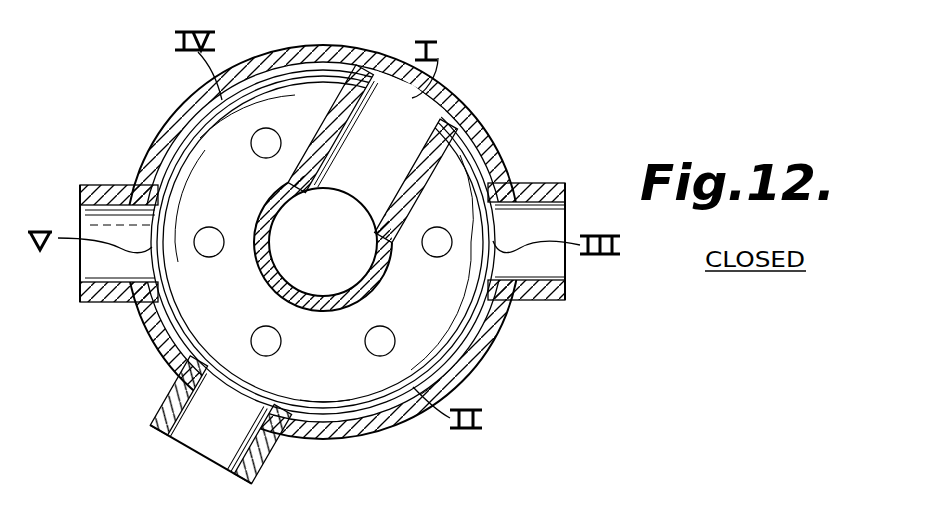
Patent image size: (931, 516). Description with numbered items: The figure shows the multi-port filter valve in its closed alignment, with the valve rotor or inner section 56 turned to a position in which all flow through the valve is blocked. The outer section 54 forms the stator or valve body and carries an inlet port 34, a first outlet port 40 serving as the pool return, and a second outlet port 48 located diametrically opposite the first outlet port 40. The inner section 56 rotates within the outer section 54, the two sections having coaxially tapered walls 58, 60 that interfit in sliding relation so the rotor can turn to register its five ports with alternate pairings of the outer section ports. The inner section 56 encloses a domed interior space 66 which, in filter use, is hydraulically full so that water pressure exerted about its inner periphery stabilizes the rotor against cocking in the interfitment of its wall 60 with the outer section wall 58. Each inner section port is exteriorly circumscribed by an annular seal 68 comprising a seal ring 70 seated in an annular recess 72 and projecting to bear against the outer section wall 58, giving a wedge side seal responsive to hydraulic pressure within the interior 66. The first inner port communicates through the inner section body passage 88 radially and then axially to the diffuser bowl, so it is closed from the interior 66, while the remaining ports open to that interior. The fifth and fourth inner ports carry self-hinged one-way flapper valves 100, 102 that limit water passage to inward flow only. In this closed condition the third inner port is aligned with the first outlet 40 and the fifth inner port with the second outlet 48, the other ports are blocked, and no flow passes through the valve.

The inlet port 34 is at (190, 437).
The first outlet port 40 is at (548, 280).
The second outlet port 48 is at (97, 280).
The outer section 54 is at (490, 138).
The inner section 56 is at (325, 438).
The tapered wall 58 is at (487, 337).
The tapered wall 60 is at (178, 142).
The interior space 66 is at (323, 252).
The annular seal 68 is at (153, 182).
The seal ring 70 is at (452, 124).
The annular recess 72 is at (477, 308).
The inner section body passage 88 is at (416, 160).
The flapper valve 100 is at (173, 257).
The flapper valve 102 is at (263, 90).